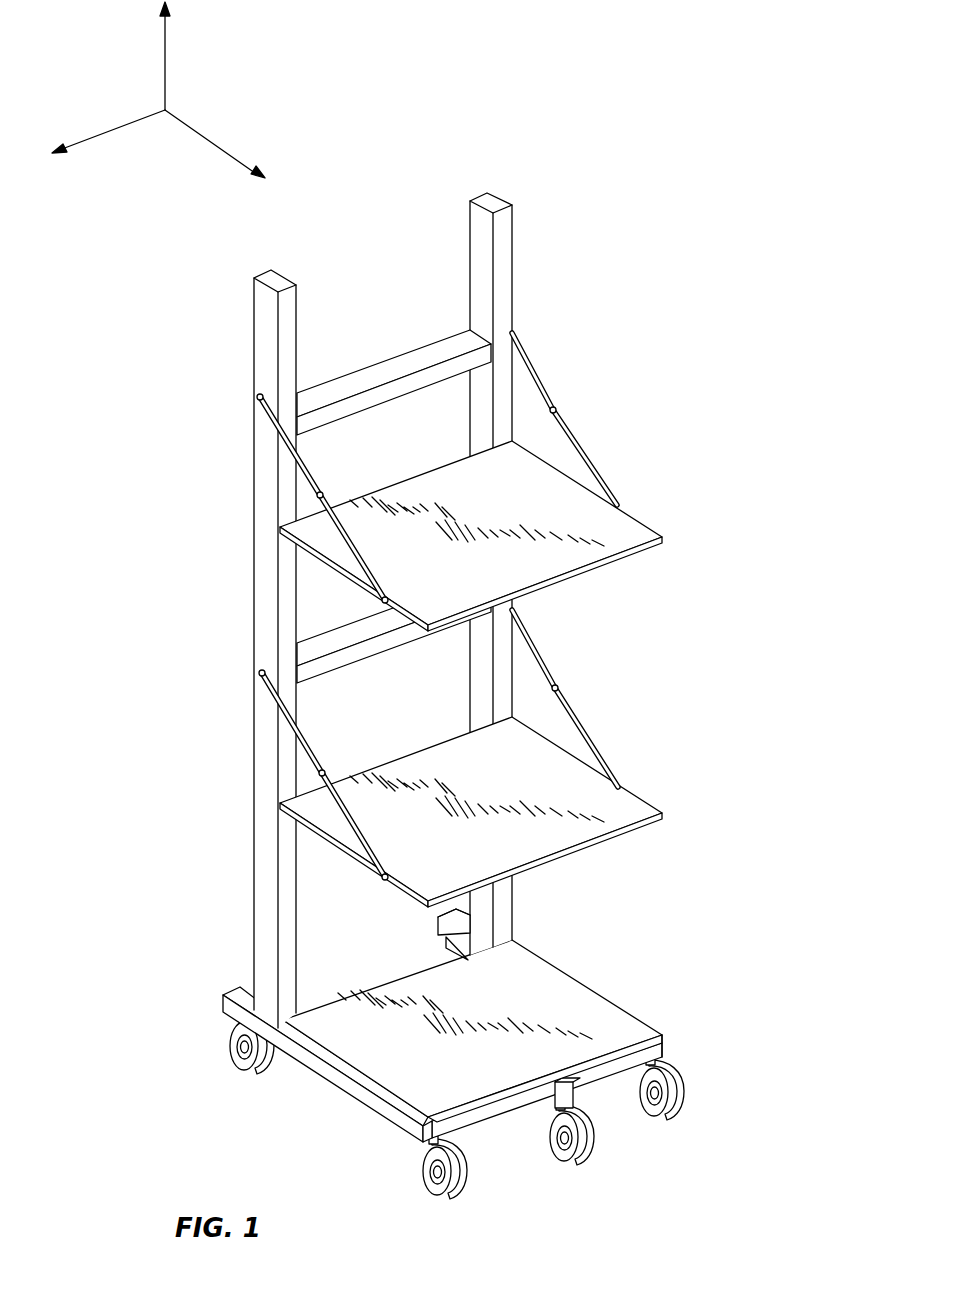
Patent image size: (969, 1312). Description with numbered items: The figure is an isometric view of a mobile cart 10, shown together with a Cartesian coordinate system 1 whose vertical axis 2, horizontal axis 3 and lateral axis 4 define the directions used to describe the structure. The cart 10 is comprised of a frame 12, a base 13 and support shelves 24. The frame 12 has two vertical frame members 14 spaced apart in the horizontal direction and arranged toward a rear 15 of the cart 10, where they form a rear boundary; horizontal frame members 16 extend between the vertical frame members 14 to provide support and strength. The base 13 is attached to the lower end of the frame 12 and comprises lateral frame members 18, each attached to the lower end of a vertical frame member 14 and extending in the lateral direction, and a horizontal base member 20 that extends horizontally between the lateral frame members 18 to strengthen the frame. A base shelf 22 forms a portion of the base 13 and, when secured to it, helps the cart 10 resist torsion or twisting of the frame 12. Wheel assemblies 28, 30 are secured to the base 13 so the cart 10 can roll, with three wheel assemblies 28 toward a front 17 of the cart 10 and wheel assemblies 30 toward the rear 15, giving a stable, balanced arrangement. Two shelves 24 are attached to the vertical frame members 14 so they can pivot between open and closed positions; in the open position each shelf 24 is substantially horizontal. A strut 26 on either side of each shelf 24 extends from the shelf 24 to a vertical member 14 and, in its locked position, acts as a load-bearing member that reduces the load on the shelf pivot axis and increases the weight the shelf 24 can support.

The Cartesian coordinate system 1 is at (208, 91).
The vertical axis 2 is at (166, 66).
The horizontal axis 3 is at (103, 137).
The lateral axis 4 is at (215, 142).
The mobile cart 10 is at (582, 130).
The frame 12 is at (180, 342).
The base 13 is at (195, 970).
The vertical frame member 14 is at (512, 276).
The rear 15 is at (225, 314).
The horizontal frame member 16 is at (403, 364).
The front 17 is at (683, 1195).
The lateral frame member 18 is at (375, 1097).
The horizontal base member 20 is at (605, 1080).
The base shelf 22 is at (563, 1002).
The shelf 24 is at (570, 562).
The strut 26 is at (567, 423).
The wheel assembly 28 is at (572, 1152).
The wheel assembly 30 is at (250, 1065).